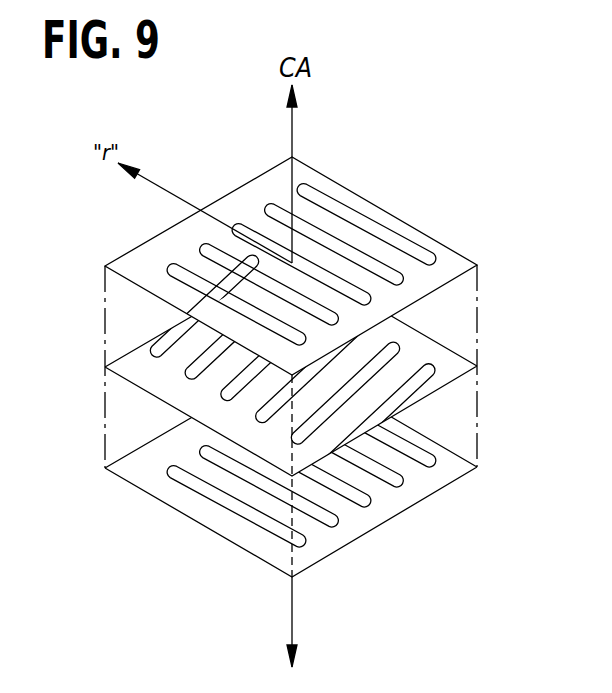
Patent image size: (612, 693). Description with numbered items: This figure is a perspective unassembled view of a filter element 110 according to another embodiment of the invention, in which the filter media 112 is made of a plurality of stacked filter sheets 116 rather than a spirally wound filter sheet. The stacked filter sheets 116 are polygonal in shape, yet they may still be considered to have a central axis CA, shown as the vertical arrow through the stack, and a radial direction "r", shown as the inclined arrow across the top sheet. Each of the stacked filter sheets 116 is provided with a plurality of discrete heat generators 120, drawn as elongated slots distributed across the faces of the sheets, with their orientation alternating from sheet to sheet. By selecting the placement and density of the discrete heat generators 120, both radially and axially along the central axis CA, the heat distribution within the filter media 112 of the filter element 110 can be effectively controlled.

The filter element 110 is at (340, 359).
The filter media 112 is at (457, 260).
The stacked filter sheets 116 is at (332, 367).
The discrete heat generators 120 is at (353, 257).